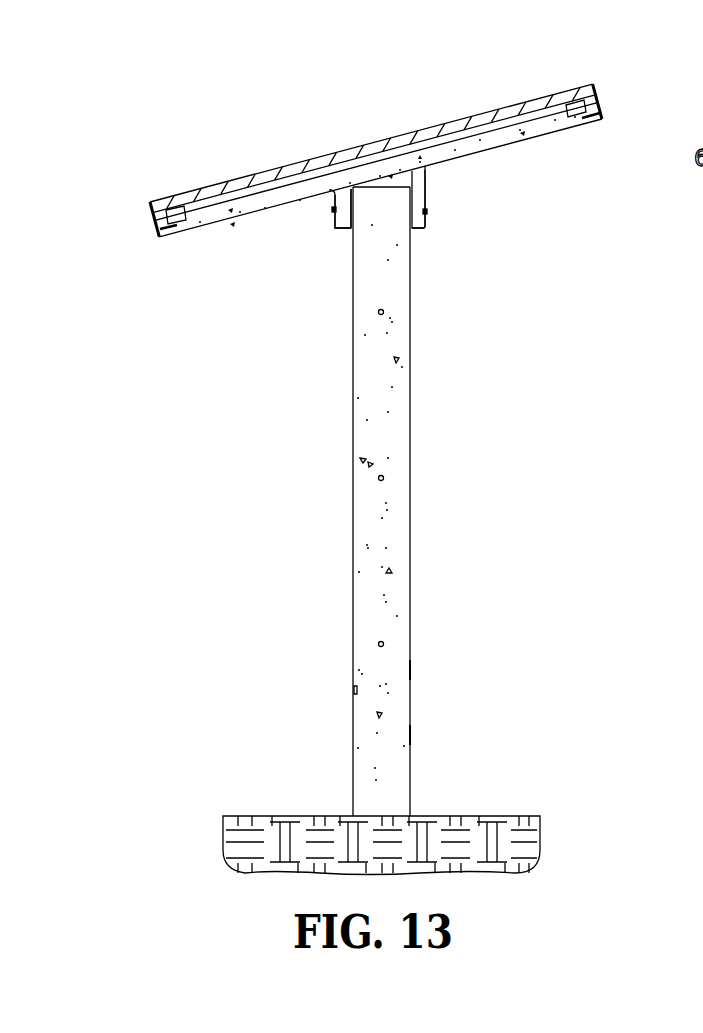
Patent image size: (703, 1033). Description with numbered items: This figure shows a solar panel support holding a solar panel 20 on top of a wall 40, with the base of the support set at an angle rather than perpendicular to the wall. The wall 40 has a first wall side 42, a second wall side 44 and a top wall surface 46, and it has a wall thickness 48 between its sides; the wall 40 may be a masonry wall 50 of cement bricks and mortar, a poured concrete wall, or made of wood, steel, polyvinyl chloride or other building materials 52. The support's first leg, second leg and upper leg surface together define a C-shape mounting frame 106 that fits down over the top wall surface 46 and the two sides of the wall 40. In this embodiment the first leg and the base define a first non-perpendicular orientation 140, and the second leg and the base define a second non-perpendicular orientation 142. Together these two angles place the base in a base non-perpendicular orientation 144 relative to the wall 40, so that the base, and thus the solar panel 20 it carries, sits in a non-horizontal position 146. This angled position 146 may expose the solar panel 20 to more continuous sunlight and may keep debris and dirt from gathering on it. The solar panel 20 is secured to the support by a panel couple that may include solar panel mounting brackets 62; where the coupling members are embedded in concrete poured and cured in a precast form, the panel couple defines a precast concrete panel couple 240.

The solar panel 20 is at (303, 190).
The top wall surface 46 is at (383, 187).
The solar panel mounting brackets 62 is at (146, 215).
The precast concrete panel couple 240 is at (145, 222).
The non-horizontal position 146 is at (573, 121).
The base non-perpendicular orientation 144 is at (428, 188).
The second non-perpendicular orientation 142 is at (424, 228).
The first non-perpendicular orientation 140 is at (333, 222).
The C-shape mounting frame 106 is at (351, 232).
The wall 40 is at (384, 501).
The first wall side 42 is at (353, 412).
The second wall side 44 is at (410, 440).
The wall thickness 48 is at (410, 531).
The masonry wall 50 is at (410, 668).
The other building materials 52 is at (410, 733).